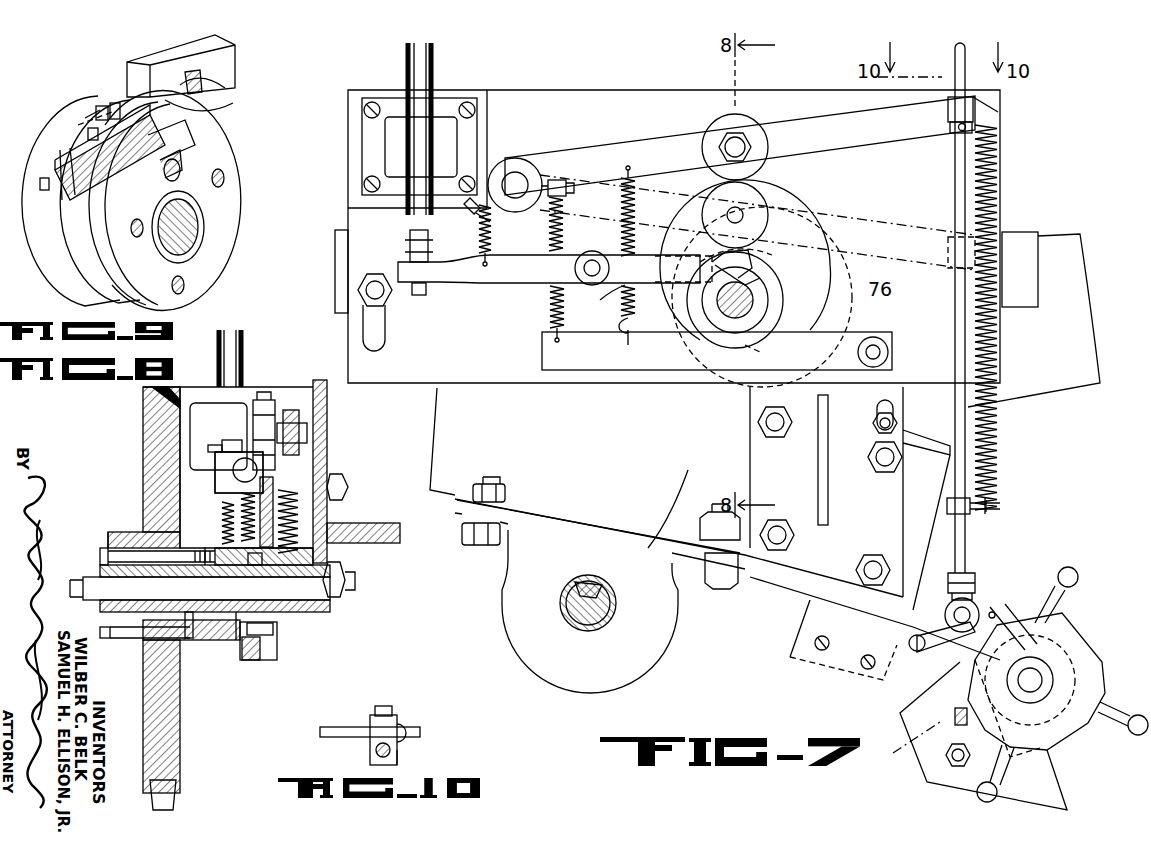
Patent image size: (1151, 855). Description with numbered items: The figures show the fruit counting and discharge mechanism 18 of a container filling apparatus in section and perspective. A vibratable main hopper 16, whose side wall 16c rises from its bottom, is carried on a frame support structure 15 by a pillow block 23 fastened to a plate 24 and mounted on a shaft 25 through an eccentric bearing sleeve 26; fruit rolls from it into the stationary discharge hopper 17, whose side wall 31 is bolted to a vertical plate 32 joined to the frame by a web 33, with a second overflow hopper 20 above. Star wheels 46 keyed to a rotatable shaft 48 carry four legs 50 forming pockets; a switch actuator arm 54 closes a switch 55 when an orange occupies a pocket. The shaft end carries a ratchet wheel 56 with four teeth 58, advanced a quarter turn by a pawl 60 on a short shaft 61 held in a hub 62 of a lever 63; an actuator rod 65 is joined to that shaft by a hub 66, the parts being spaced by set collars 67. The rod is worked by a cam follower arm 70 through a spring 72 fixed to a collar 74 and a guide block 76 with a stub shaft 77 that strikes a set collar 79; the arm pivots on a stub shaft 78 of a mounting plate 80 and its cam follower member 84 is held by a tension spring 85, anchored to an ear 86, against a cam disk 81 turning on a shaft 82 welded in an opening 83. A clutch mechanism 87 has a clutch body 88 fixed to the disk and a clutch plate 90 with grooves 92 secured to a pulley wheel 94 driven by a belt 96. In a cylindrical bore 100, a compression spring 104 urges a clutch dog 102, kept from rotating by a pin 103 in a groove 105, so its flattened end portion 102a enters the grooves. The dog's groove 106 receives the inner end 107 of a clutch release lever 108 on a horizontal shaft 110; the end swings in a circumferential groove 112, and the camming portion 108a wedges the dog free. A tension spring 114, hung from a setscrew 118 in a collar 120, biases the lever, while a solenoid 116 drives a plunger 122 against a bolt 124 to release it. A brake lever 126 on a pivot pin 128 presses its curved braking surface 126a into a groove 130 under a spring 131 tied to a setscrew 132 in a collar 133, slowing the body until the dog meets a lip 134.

In FIG. 7, the frame support structure 15 is at (1010, 232).
In FIG. 8, the frame support structure 15 is at (352, 524).
In FIG. 7, the main hopper 16 is at (632, 429).
In FIG. 7, the side wall 16c is at (655, 515).
In FIG. 7, the discharge hopper 17 is at (930, 484).
In FIG. 7, the counting mechanism 18 is at (1075, 568).
In FIG. 7, the second overflow hopper 20 is at (1058, 336).
In FIG. 7, the pillow block 23 is at (603, 669).
In FIG. 7, the plate 24 is at (585, 517).
In FIG. 7, the shaft 25 is at (598, 605).
In FIG. 7, the eccentric bearing sleeve 26 is at (604, 585).
In FIG. 7, the side wall 31 is at (780, 583).
In FIG. 7, the vertical plate 32 is at (870, 509).
In FIG. 7, the web 33 is at (818, 459).
In FIG. 7, the star wheel 46 is at (1030, 680).
In FIG. 7, the rotatable shaft 48 is at (1040, 684).
In FIG. 7, the legs 50 is at (910, 642).
In FIG. 7, the switch actuator arm 54 is at (928, 625).
In FIG. 7, the switch 55 is at (788, 656).
In FIG. 7, the ratchet wheel 56 is at (983, 697).
In FIG. 7, the teeth 58 is at (1005, 626).
In FIG. 7, the pawl 60 is at (953, 681).
In FIG. 7, the short shaft 61 is at (955, 610).
In FIG. 7, the hub 62 is at (977, 608).
In FIG. 7, the lever 63 is at (960, 640).
In FIG. 7, the actuator rod 65 is at (955, 172).
In FIG. 10, the actuator rod 65 is at (375, 752).
In FIG. 7, the hub 66 is at (962, 585).
In FIG. 7, the set collars 67 is at (968, 600).
In FIG. 7, the cam follower arm 70 is at (830, 128).
In FIG. 8, the cam follower arm 70 is at (305, 428).
In FIG. 10, the cam follower arm 70 is at (340, 737).
In FIG. 7, the spring 72 is at (990, 165).
In FIG. 10, the spring 72 is at (407, 735).
In FIG. 7, the collar 74 is at (947, 506).
In FIG. 7, the guide block 76 is at (950, 112).
In FIG. 10, the guide block 76 is at (398, 757).
In FIG. 10, the stub shaft 77 is at (385, 706).
In FIG. 7, the stub shaft 78 is at (520, 184).
In FIG. 8, the stub shaft 78 is at (215, 482).
In FIG. 7, the set collar 79 is at (950, 132).
In FIG. 7, the mounting plate 80 is at (645, 122).
In FIG. 8, the mounting plate 80 is at (320, 440).
In FIG. 7, the cam disk 81 is at (828, 250).
In FIG. 8, the cam disk 81 is at (262, 518).
In FIG. 7, the shaft 82 is at (732, 312).
In FIG. 9, the shaft 82 is at (165, 243).
In FIG. 8, the shaft 82 is at (143, 602).
In FIG. 8, the opening 83 is at (348, 572).
In FIG. 7, the cam follower member 84 is at (760, 163).
In FIG. 8, the cam follower member 84 is at (264, 420).
In FIG. 7, the tension spring 85 is at (624, 230).
In FIG. 8, the tension spring 85 is at (300, 472).
In FIG. 7, the ear 86 is at (620, 323).
In FIG. 7, the clutch mechanism 87 is at (772, 262).
In FIG. 9, the clutch mechanism 87 is at (195, 124).
In FIG. 8, the clutch mechanism 87 is at (200, 545).
In FIG. 7, the clutch body 88 is at (768, 290).
In FIG. 9, the clutch body 88 is at (220, 205).
In FIG. 8, the clutch body 88 is at (230, 640).
In FIG. 9, the clutch plate 90 is at (45, 192).
In FIG. 8, the clutch plate 90 is at (150, 645).
In FIG. 9, the grooves 92 is at (110, 118).
In FIG. 8, the grooves 92 is at (218, 640).
In FIG. 8, the pulley wheel 94 is at (165, 462).
In FIG. 8, the belt 96 is at (150, 400).
In FIG. 9, the cylindrical bore 100 is at (188, 160).
In FIG. 8, the cylindrical bore 100 is at (235, 560).
In FIG. 7, the clutch dog 102 is at (724, 305).
In FIG. 9, the clutch dog 102 is at (195, 138).
In FIG. 8, the clutch dog 102 is at (210, 568).
In FIG. 9, the flattened end portion 102a is at (70, 122).
In FIG. 8, the flattened end portion 102a is at (208, 548).
In FIG. 9, the pin 103 is at (102, 106).
In FIG. 9, the compression spring 104 is at (183, 170).
In FIG. 9, the groove 105 is at (115, 103).
In FIG. 9, the groove 106 is at (90, 118).
In FIG. 7, the inner end 107 is at (718, 250).
In FIG. 9, the inner end 107 is at (152, 72).
In FIG. 7, the clutch release lever 108 is at (612, 298).
In FIG. 9, the clutch release lever 108 is at (232, 60).
In FIG. 8, the clutch release lever 108 is at (262, 560).
In FIG. 7, the camming portion 108a is at (700, 274).
In FIG. 9, the camming portion 108a is at (200, 85).
In FIG. 7, the horizontal shaft 110 is at (575, 271).
In FIG. 9, the circumferential groove 112 is at (78, 253).
In FIG. 8, the circumferential groove 112 is at (240, 645).
In FIG. 7, the tension spring 114 is at (491, 234).
In FIG. 7, the solenoid 116 is at (445, 130).
In FIG. 8, the solenoid 116 is at (238, 405).
In FIG. 7, the setscrew 118 is at (472, 210).
In FIG. 7, the collar 120 is at (500, 170).
In FIG. 8, the collar 120 is at (215, 478).
In FIG. 7, the plunger 122 is at (420, 72).
In FIG. 8, the plunger 122 is at (235, 355).
In FIG. 7, the bolt 124 is at (410, 238).
In FIG. 7, the brake lever 126 is at (632, 364).
In FIG. 8, the brake lever 126 is at (250, 660).
In FIG. 7, the curved braking surface 126a is at (765, 347).
In FIG. 8, the curved braking surface 126a is at (268, 632).
In FIG. 7, the pivot pin 128 is at (875, 338).
In FIG. 9, the groove 130 is at (110, 257).
In FIG. 8, the groove 130 is at (255, 650).
In FIG. 7, the spring 131 is at (552, 217).
In FIG. 8, the spring 131 is at (275, 555).
In FIG. 7, the setscrew 132 is at (562, 190).
In FIG. 8, the setscrew 132 is at (246, 460).
In FIG. 8, the collar 133 is at (240, 450).
In FIG. 7, the lip 134 is at (762, 260).
In FIG. 9, the lip 134 is at (214, 101).